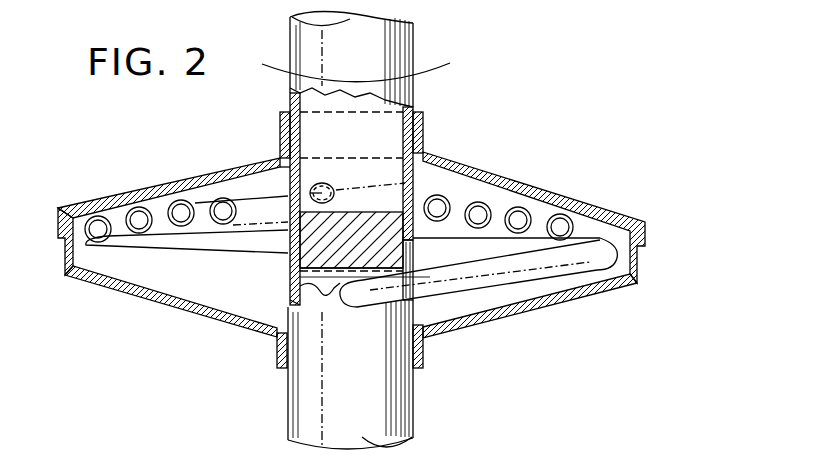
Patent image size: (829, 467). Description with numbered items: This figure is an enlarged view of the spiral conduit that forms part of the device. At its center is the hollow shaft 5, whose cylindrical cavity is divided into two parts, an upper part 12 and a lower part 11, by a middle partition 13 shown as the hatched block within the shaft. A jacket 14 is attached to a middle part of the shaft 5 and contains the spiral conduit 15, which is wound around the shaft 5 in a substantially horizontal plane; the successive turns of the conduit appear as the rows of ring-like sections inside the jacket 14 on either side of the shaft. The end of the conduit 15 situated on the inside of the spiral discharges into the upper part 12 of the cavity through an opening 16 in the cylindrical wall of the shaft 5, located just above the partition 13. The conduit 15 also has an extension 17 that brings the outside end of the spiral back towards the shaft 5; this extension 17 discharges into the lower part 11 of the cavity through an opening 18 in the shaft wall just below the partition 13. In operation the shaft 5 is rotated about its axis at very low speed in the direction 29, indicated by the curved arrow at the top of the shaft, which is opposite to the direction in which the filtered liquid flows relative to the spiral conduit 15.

The hollow shaft 5 is at (383, 50).
The lower part of the cavity 11 is at (290, 298).
The upper part of the cavity 12 is at (362, 172).
The middle partition 13 is at (298, 256).
The jacket 14 is at (582, 197).
The spiral conduit 15 is at (450, 200).
The opening 16 is at (306, 189).
The extension 17 is at (472, 275).
The opening 18 is at (347, 300).
The direction of rotation 29 is at (283, 40).